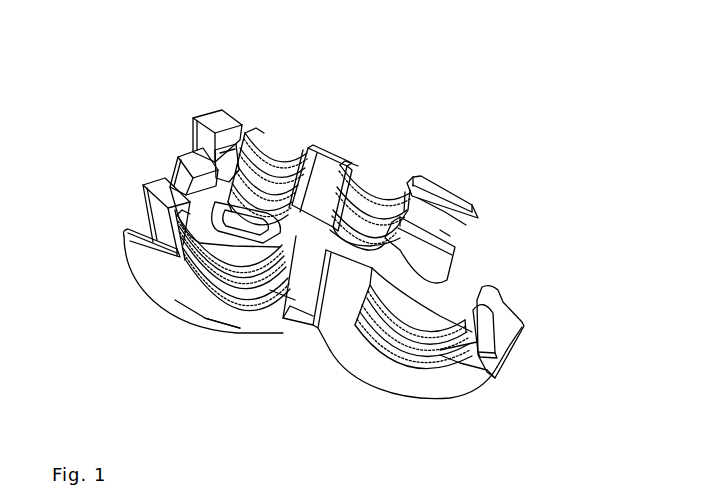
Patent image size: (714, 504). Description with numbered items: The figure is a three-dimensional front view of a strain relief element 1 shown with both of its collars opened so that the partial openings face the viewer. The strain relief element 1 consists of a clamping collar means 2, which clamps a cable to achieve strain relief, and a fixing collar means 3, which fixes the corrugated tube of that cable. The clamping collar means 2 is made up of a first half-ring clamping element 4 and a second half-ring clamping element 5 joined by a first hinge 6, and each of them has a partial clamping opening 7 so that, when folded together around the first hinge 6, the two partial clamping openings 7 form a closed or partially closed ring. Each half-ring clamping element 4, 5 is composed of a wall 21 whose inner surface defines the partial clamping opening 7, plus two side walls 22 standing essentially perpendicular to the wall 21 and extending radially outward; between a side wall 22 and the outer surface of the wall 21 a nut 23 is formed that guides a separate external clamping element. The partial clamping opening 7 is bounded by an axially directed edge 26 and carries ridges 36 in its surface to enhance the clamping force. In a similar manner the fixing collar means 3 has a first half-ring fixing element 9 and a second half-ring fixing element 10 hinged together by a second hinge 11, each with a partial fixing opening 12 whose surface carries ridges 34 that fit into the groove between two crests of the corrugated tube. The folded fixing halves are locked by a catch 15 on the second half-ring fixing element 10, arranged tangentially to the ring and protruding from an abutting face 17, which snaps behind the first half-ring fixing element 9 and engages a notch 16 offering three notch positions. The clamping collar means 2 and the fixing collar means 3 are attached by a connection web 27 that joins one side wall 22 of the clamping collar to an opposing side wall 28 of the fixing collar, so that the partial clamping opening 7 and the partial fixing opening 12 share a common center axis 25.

The strain relief element 1 is at (457, 97).
The clamping collar means 2 is at (152, 125).
The fixing collar means 3 is at (108, 227).
The first half-ring clamping element 4 is at (225, 104).
The second half-ring clamping element 5 is at (445, 178).
The first hinge 6 is at (323, 174).
The partial clamping opening 7 is at (255, 146).
The first half-ring fixing element 9 is at (118, 268).
The second half-ring fixing element 10 is at (450, 410).
The second hinge 11 is at (317, 293).
The partial fixing opening 12 is at (203, 257).
The catch 15 is at (502, 325).
The notch 16 is at (143, 220).
The abutting face 17 is at (488, 370).
The wall 21 is at (213, 160).
The side wall of clamping collar means 22 is at (188, 180).
The nut 23 is at (444, 233).
The center axis 25 is at (188, 337).
The axially directed edge of the partial clamping opening 26 is at (304, 156).
The connection web 27 is at (250, 232).
The side wall of fixing collar means 28 is at (147, 187).
The fixing ridge in the surface of the partial fixing opening 34 is at (200, 290).
The ridges 36 is at (213, 114).